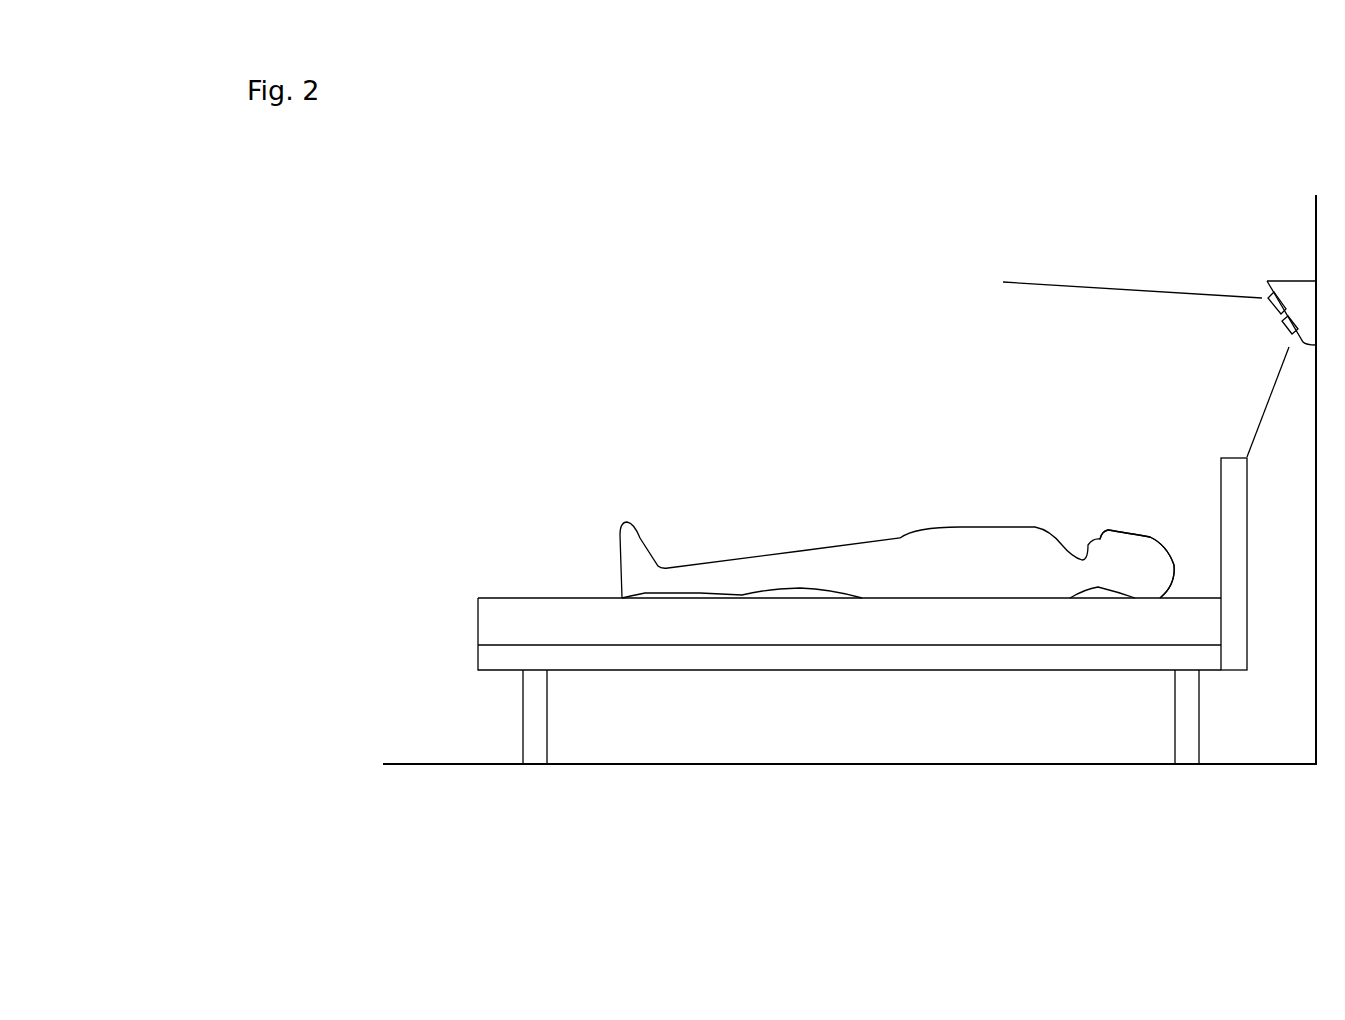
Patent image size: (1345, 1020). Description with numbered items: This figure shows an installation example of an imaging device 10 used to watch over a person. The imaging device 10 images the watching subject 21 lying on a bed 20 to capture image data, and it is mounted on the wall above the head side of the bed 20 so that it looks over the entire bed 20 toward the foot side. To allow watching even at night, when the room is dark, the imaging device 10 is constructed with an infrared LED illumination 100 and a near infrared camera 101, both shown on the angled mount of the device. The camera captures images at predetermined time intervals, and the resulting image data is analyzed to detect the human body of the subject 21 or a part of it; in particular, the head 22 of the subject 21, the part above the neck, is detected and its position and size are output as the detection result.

The imaging device 10 is at (1159, 339).
The infrared LED illumination 100 is at (1268, 301).
The near infrared camera 101 is at (1284, 327).
The bed 20 is at (523, 608).
The watching subject 21 is at (978, 538).
The head 22 is at (1145, 538).